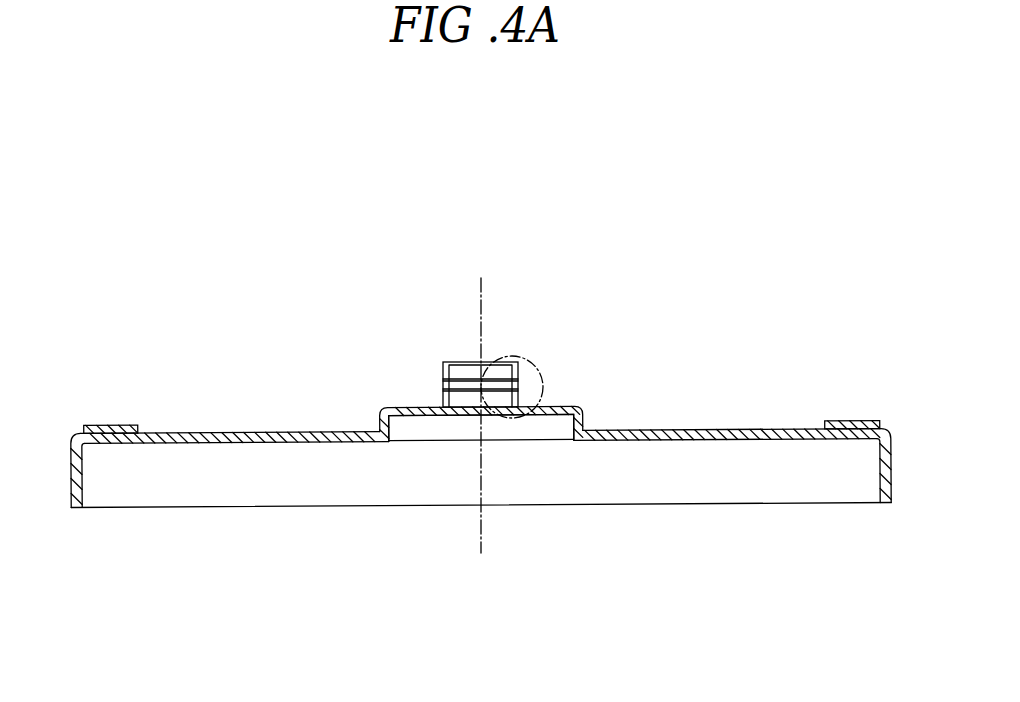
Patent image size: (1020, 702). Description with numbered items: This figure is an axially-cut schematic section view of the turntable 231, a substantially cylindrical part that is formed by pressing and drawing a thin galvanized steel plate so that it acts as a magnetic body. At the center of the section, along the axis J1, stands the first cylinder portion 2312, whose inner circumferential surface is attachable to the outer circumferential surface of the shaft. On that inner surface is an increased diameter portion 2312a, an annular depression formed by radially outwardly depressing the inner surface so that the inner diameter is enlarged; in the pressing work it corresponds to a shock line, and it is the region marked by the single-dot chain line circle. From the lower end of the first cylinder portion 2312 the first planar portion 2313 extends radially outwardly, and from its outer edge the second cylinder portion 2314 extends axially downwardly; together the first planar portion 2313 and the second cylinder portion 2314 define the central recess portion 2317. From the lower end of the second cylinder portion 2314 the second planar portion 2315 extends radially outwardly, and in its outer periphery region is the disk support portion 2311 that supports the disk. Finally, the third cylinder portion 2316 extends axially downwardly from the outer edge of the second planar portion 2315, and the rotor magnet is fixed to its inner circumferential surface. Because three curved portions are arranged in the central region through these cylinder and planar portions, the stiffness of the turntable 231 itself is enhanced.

The turntable 231 is at (205, 286).
The disk support portion 2311 is at (110, 423).
The first cylinder portion 2312 is at (442, 375).
The increased diameter portion 2312a is at (507, 382).
The first planar portion 2313 is at (393, 405).
The second cylinder portion 2314 is at (585, 420).
The second planar portion 2315 is at (270, 437).
The third cylinder portion 2316 is at (893, 447).
The central recess portion 2317 is at (431, 427).
The center axis J1 is at (480, 278).